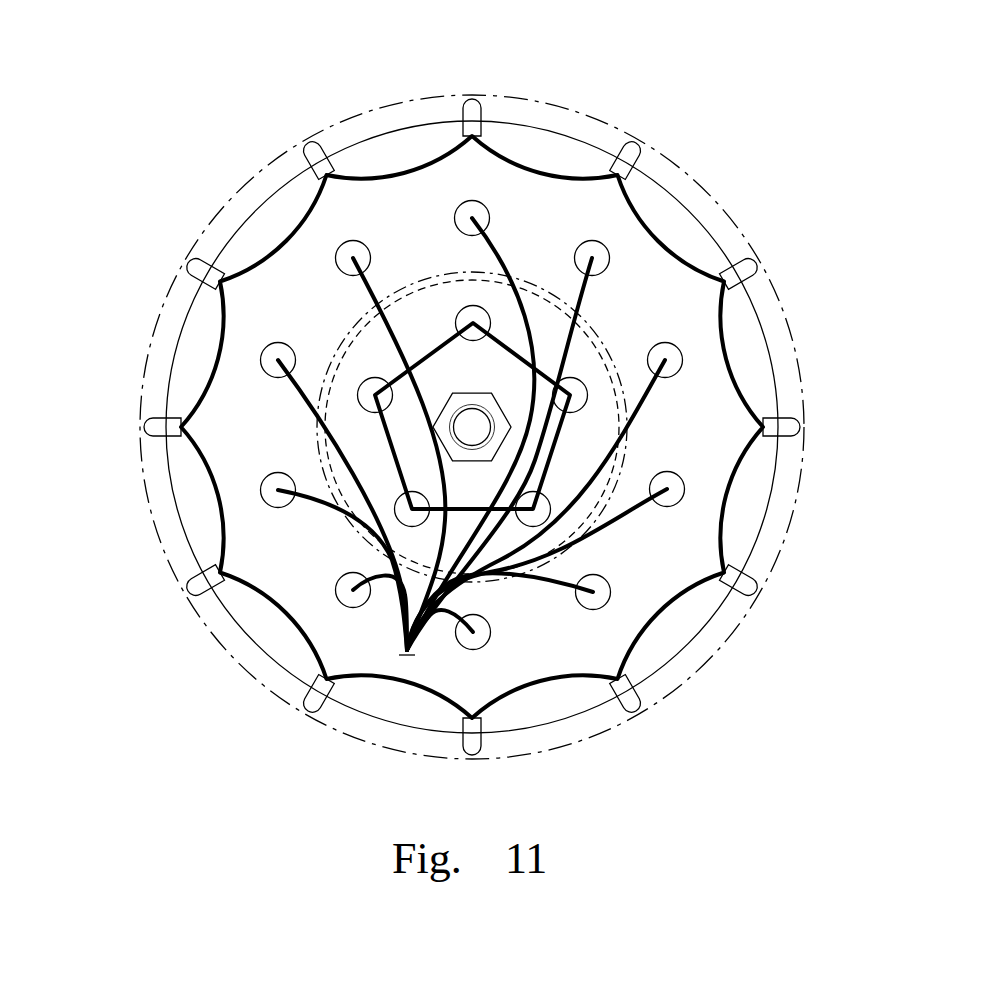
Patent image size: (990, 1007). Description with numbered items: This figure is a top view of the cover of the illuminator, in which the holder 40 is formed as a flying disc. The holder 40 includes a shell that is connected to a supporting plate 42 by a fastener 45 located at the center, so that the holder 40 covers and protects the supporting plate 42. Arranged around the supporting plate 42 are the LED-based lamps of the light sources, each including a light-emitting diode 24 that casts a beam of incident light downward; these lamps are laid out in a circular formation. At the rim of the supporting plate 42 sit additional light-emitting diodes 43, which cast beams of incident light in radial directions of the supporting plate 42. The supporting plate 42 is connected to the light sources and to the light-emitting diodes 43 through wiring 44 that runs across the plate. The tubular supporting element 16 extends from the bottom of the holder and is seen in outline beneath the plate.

The supporting element 16 is at (357, 330).
The light-emitting diode 24 is at (672, 480).
The holder 40 is at (800, 498).
The supporting plate 42 is at (677, 242).
The light-emitting diodes 43 is at (312, 143).
The wiring 44 is at (405, 622).
The fastener 45 is at (482, 423).